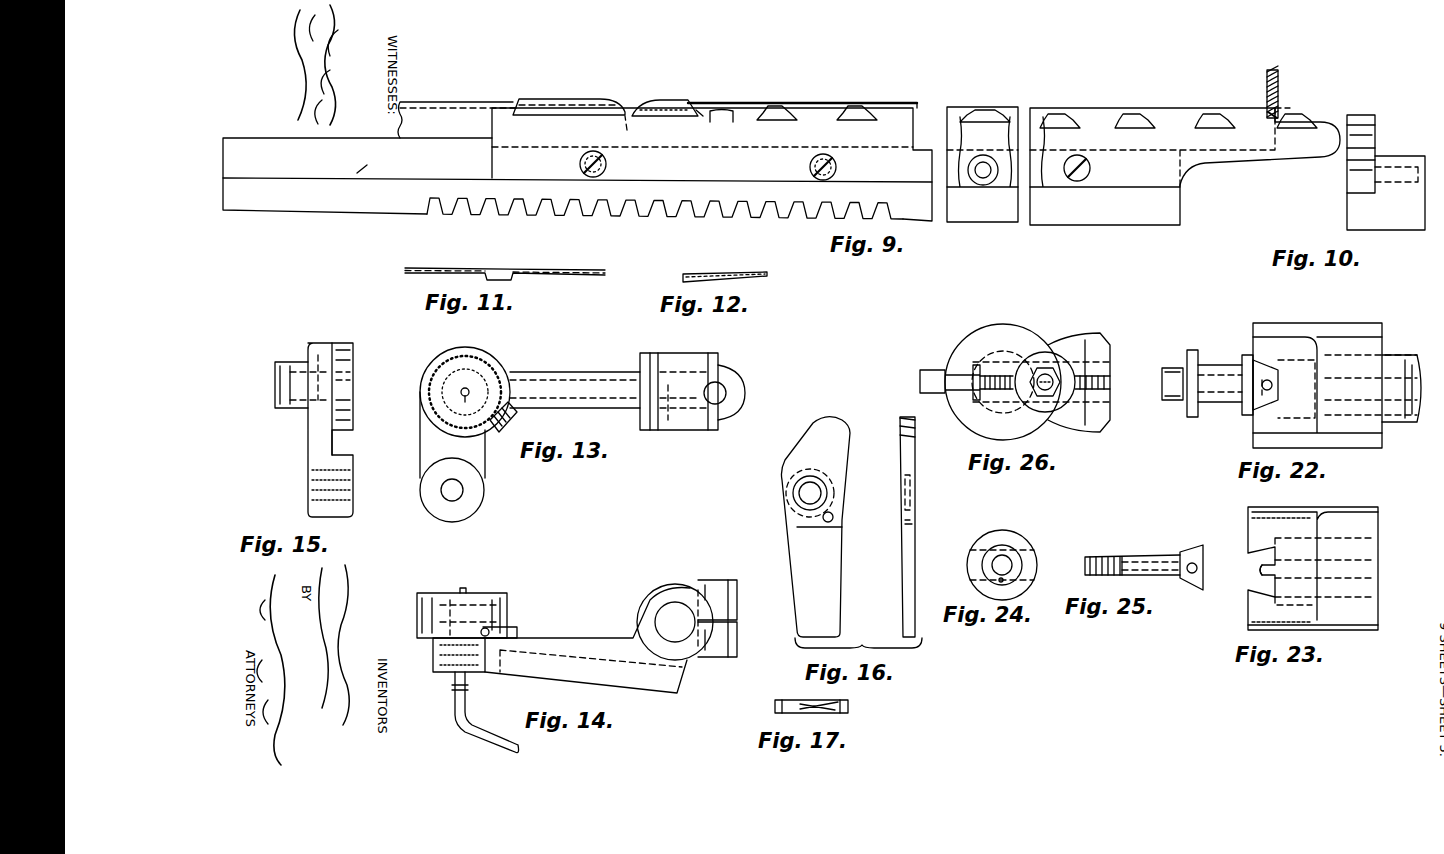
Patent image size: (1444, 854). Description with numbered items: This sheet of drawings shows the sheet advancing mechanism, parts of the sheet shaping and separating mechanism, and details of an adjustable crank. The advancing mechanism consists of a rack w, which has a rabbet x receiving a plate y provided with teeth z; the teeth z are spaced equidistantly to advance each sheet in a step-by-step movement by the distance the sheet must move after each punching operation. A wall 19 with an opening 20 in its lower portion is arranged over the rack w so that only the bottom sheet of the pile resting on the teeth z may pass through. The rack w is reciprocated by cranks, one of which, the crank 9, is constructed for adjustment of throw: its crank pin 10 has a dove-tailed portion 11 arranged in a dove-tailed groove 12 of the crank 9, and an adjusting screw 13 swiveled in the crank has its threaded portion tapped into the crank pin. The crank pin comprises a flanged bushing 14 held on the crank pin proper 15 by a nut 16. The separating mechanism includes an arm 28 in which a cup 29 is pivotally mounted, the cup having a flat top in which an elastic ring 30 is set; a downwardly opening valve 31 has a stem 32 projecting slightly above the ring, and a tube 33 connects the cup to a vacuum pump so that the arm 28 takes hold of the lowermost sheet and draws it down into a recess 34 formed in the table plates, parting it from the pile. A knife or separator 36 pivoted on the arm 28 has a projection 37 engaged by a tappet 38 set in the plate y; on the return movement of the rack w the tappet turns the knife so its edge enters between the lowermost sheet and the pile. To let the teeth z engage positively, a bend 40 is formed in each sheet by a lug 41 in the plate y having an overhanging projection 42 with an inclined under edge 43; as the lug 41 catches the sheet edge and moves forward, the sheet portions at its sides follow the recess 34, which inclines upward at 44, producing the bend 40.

In FIG. 26, the crank 9 is at (1012, 326).
In FIG. 22, the crank 9 is at (1330, 328).
In FIG. 23, the crank 9 is at (1338, 512).
In FIG. 26, the crank pin 10 is at (1048, 378).
In FIG. 22, the crank pin 10 is at (1162, 383).
In FIG. 22, the dove-tailed portion 11 is at (1273, 400).
In FIG. 25, the dove-tailed portion 11 is at (1191, 548).
In FIG. 22, the dove-tailed groove 12 is at (1268, 365).
In FIG. 23, the dove-tailed groove 12 is at (1262, 592).
In FIG. 26, the adjusting screw 13 is at (965, 392).
In FIG. 22, the adjusting screw 13 is at (1272, 380).
In FIG. 22, the flanged bushing 14 is at (1220, 405).
In FIG. 25, the crank pin proper 15 is at (1138, 560).
In FIG. 22, the nut 16 is at (1185, 405).
In FIG. 24, the nut 16 is at (1025, 548).
In FIG. 9, the wall 19 is at (1278, 86).
In FIG. 9, the opening 20 is at (1278, 112).
In FIG. 13, the arm 28 is at (558, 378).
In FIG. 15, the arm 28 is at (318, 347).
In FIG. 14, the arm 28 is at (572, 648).
In FIG. 15, the cup 29 is at (350, 372).
In FIG. 14, the cup 29 is at (507, 610).
In FIG. 13, the elastic ring 30 is at (490, 372).
In FIG. 14, the elastic ring 30 is at (498, 600).
In FIG. 14, the downwardly opening valve 31 is at (420, 630).
In FIG. 13, the valve stem 32 is at (487, 410).
In FIG. 14, the valve stem 32 is at (463, 592).
In FIG. 14, the tube 33 is at (470, 720).
In FIG. 9, the recess 34 is at (634, 130).
In FIG. 16, the knife or separator 36 is at (900, 563).
In FIG. 17, the knife or separator 36 is at (848, 707).
In FIG. 16, the projection 37 is at (803, 443).
In FIG. 9, the tappet 38 is at (575, 112).
In FIG. 11, the bend 40 is at (506, 275).
In FIG. 12, the bend 40 is at (692, 276).
In FIG. 9, the lug 41 is at (656, 106).
In FIG. 9, the overhanging projection 42 is at (682, 102).
In FIG. 9, the inclined under edge 43 is at (695, 113).
In FIG. 9, the upward incline 44 is at (733, 116).
In FIG. 9, the rack w is at (392, 210).
In FIG. 10, the rack w is at (1350, 213).
In FIG. 9, the rabbet x is at (367, 163).
In FIG. 10, the rabbet x is at (1376, 187).
In FIG. 9, the plate y is at (702, 163).
In FIG. 10, the plate y is at (1347, 174).
In FIG. 9, the teeth z is at (781, 108).
In FIG. 10, the teeth z is at (1360, 115).